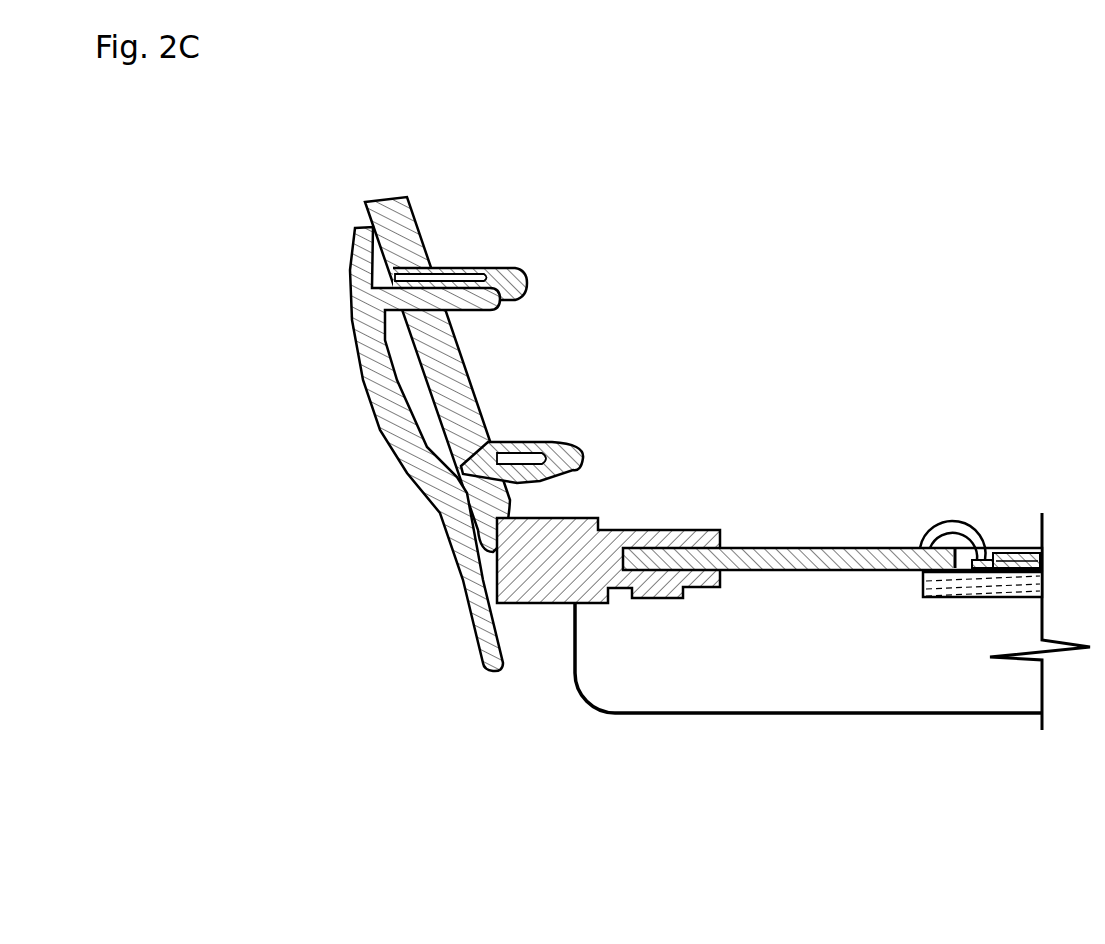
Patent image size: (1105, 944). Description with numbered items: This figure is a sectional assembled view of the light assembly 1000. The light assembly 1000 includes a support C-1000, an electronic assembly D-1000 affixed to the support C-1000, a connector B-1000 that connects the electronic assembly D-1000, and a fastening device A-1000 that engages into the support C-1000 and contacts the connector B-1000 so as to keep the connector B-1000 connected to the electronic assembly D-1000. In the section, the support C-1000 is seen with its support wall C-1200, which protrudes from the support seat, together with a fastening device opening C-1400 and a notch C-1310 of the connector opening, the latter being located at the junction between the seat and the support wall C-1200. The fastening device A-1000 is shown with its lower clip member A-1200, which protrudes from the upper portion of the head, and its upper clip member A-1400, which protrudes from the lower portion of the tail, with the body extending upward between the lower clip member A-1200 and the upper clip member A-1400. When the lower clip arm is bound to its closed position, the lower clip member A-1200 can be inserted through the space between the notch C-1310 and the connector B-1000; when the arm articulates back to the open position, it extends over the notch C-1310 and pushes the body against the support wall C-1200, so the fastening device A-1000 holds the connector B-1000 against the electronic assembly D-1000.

The light assembly 1000 is at (790, 236).
The support C-1000 is at (472, 203).
The support wall C-1200 is at (367, 200).
The fastening device opening C-1400 is at (425, 263).
The notch C-1310 is at (490, 452).
The fastening device A-1000 is at (345, 480).
The upper clip member A-1400 is at (382, 296).
The lower clip member A-1200 is at (460, 482).
The connector B-1000 is at (549, 682).
The electronic assembly D-1000 is at (980, 468).